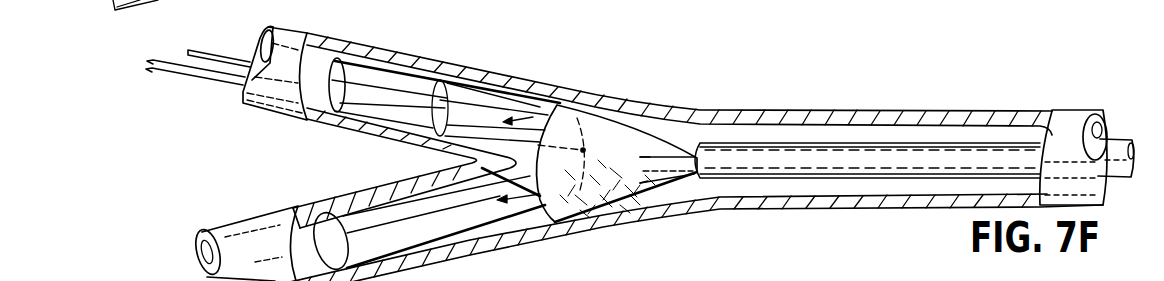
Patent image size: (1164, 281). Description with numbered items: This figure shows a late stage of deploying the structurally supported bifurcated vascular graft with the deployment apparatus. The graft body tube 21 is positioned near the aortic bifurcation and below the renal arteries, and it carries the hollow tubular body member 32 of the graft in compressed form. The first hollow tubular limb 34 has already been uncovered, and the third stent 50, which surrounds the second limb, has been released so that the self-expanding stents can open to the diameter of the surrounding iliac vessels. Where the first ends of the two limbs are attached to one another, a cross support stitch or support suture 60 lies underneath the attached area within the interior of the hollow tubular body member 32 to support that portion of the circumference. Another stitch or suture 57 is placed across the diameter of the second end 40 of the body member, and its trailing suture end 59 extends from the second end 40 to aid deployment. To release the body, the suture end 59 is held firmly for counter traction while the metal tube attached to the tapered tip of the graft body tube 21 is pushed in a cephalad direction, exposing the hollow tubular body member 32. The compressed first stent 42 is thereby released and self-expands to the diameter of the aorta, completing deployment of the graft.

The graft body tube 21 is at (842, 155).
The hollow tubular body member 32 is at (632, 125).
The first hollow tubular limb 34 is at (696, 237).
The second end 40 is at (628, 127).
The first stent 42 is at (640, 183).
The third stent 50 is at (309, 60).
The suture 57 is at (577, 115).
The suture end 59 is at (168, 58).
The support suture 60 is at (172, 76).